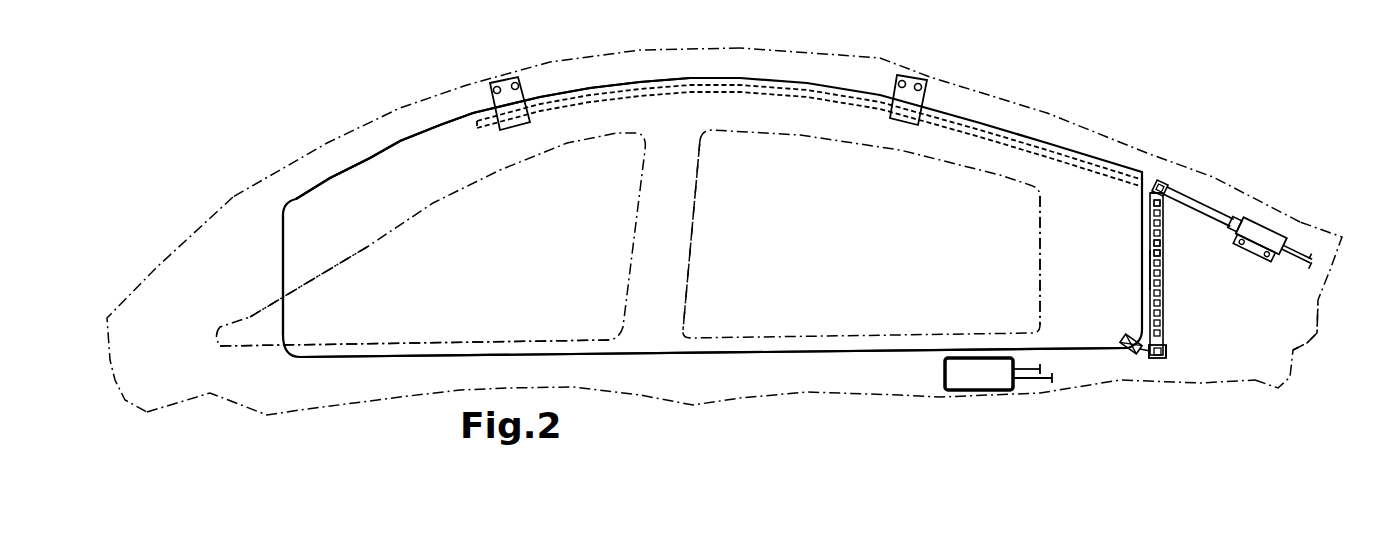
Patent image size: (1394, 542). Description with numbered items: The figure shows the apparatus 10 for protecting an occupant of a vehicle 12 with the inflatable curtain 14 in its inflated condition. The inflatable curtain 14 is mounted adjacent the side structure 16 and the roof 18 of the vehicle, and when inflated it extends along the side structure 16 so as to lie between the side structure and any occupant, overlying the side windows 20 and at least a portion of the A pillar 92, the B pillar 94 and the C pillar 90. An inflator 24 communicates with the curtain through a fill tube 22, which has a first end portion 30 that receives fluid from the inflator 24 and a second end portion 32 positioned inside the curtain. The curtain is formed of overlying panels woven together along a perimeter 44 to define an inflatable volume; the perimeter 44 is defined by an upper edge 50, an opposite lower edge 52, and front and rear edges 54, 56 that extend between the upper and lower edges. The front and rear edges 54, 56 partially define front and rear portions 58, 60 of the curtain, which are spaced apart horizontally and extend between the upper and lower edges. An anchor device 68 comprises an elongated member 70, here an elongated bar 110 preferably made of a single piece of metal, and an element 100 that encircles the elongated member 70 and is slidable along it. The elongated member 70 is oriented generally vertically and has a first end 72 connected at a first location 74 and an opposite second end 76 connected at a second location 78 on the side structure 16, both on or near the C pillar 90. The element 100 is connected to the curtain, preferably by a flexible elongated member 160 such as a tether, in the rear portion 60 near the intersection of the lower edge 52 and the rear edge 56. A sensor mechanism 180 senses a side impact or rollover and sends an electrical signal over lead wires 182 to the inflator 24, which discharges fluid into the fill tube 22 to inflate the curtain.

The apparatus 10 is at (399, 62).
The vehicle 12 is at (335, 157).
The inflatable curtain 14 is at (368, 305).
The side structure 16 is at (712, 383).
The roof 18 is at (880, 58).
The side windows 20 is at (562, 330).
The fill tube 22 is at (1165, 185).
The inflator 24 is at (1263, 220).
The first end portion 30 is at (1203, 207).
The second end portion 32 is at (573, 100).
The perimeter 44 is at (422, 347).
The upper edge 50 is at (687, 78).
The lower edge 52 is at (670, 355).
The front edge 54 is at (280, 238).
The rear edge 56 is at (1163, 288).
The front portion 58 is at (315, 285).
The rear portion 60 is at (1120, 295).
The anchor device 68 is at (1244, 327).
The elongated member 70 is at (1150, 270).
The first end 72 is at (1148, 201).
The first location 74 is at (1148, 207).
The second end 76 is at (1163, 357).
The second location 78 is at (1157, 358).
The C pillar 90 is at (1260, 347).
The A pillar 92 is at (228, 253).
The B pillar 94 is at (672, 210).
The element 100 is at (1166, 350).
The elongated bar 110 is at (1163, 247).
The flexible elongated member 160 is at (1131, 352).
The sensor mechanism 180 is at (980, 377).
The lead wires 182 is at (1300, 243).